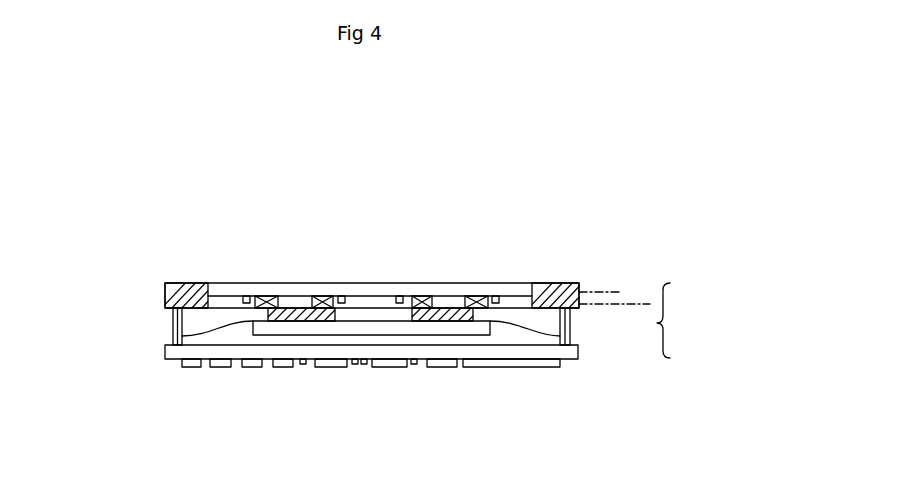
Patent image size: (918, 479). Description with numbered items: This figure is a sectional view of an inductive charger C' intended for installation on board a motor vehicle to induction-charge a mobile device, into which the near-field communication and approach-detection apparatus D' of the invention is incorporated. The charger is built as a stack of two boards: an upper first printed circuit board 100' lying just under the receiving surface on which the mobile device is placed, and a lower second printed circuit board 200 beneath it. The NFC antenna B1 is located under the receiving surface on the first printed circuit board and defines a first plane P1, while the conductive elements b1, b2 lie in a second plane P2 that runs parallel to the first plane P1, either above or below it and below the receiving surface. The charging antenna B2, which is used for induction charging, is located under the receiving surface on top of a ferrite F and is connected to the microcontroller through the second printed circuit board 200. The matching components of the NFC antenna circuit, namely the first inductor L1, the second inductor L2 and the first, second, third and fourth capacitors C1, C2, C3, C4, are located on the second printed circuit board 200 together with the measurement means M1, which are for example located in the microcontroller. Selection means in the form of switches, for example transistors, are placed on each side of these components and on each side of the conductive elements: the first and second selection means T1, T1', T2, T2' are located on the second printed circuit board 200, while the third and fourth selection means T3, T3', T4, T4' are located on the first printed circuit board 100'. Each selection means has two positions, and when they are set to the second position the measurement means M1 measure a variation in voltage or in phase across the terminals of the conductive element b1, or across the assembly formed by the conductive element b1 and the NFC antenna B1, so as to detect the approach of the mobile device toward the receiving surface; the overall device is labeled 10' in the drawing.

The first printed circuit board 100' is at (333, 284).
The second printed circuit board 200 is at (166, 352).
The NFC antenna B1 is at (186, 283).
The charging antenna B2 is at (174, 338).
The third selection means T3 is at (244, 240).
The third selection means T3' is at (342, 240).
The fourth selection means T4 is at (403, 240).
The fourth selection means T4' is at (501, 240).
The conductive element b1 is at (315, 283).
The conductive element b2 is at (478, 283).
The ferrite F is at (470, 337).
The first capacitor C1 is at (190, 368).
The second capacitor C2 is at (222, 368).
The third capacitor C3 is at (255, 368).
The fourth capacitor C4 is at (285, 368).
The first inductor L1 is at (330, 368).
The second inductor L2 is at (392, 368).
The measurement means M1 is at (455, 368).
The first selection means T1 is at (291, 409).
The first selection means T1' is at (332, 414).
The second selection means T2 is at (358, 411).
The second selection means T2' is at (414, 410).
The first plane P1 is at (610, 292).
The second plane P2 is at (640, 304).
The near-field communication and approach-detection apparatus D' is at (676, 320).
The inductive charger C' is at (696, 182).
The electronic device 10' is at (589, 398).